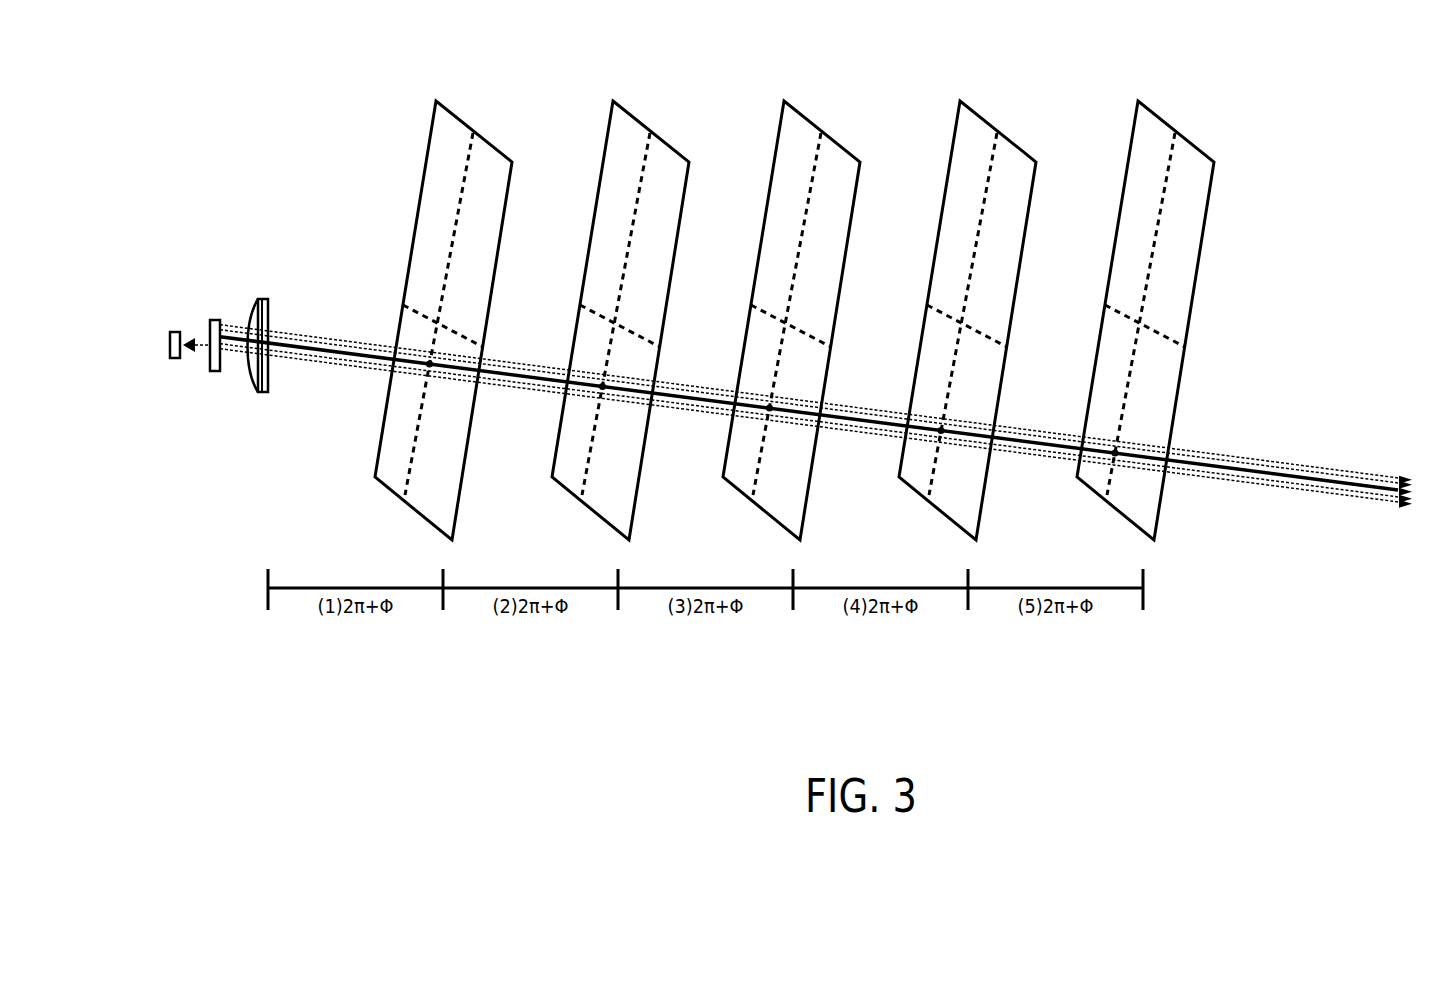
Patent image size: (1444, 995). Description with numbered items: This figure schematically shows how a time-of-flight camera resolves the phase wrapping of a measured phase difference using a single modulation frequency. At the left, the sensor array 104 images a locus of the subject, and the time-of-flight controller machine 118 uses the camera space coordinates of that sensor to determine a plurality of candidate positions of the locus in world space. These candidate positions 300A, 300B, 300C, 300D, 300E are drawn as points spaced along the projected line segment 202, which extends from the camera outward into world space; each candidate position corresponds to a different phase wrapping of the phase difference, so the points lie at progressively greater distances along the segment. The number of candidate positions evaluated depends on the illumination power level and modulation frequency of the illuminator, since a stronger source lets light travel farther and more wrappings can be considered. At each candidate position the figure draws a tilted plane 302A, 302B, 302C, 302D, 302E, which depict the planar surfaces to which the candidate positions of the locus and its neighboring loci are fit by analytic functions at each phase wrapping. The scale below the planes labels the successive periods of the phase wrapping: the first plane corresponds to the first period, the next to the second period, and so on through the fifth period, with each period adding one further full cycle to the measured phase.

The sensor array 104 is at (212, 372).
The time-of-flight controller machine 118 is at (170, 342).
The projected line segment 202 is at (1370, 486).
The candidate position 300A is at (428, 362).
The candidate position 300B is at (601, 384).
The candidate position 300C is at (768, 406).
The candidate position 300D is at (940, 428).
The candidate position 300E is at (1113, 450).
The first phase plate 302A is at (437, 102).
The second phase plate 302B is at (614, 102).
The third phase plate 302C is at (785, 102).
The fourth phase plate 302D is at (961, 102).
The fifth phase plate 302E is at (1139, 102).